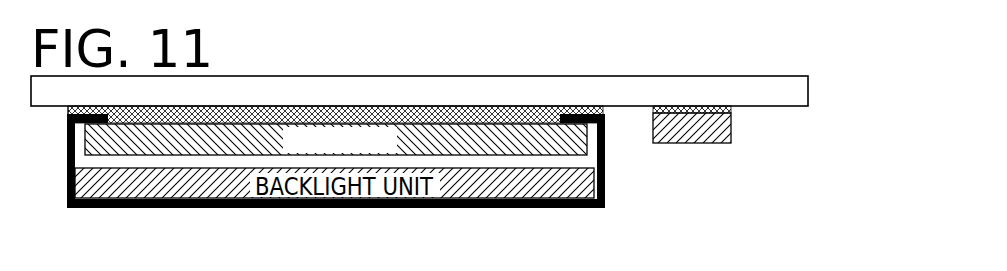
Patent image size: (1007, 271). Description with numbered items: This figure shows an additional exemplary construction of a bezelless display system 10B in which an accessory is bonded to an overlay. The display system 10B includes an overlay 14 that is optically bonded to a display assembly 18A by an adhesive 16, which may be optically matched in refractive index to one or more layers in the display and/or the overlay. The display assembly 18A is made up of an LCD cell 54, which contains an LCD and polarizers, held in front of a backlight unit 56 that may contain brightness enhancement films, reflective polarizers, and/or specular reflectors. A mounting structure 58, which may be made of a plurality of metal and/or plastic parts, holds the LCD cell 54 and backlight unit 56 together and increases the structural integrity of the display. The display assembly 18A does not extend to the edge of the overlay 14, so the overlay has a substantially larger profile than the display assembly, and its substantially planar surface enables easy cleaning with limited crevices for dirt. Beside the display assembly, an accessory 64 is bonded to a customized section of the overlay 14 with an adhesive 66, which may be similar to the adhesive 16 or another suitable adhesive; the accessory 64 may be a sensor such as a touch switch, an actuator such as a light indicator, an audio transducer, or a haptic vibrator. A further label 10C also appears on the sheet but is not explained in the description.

The display system 10B is at (426, 54).
The display assembly 10C is at (380, 269).
The overlay 14 is at (243, 75).
The adhesive 16 is at (67, 108).
The display assembly 18A is at (579, 220).
The LCD cell 54 is at (498, 120).
The backlight unit 56 is at (552, 166).
The mounting structure 58 is at (165, 208).
The accessory 64 is at (731, 126).
The adhesive 66 is at (732, 109).